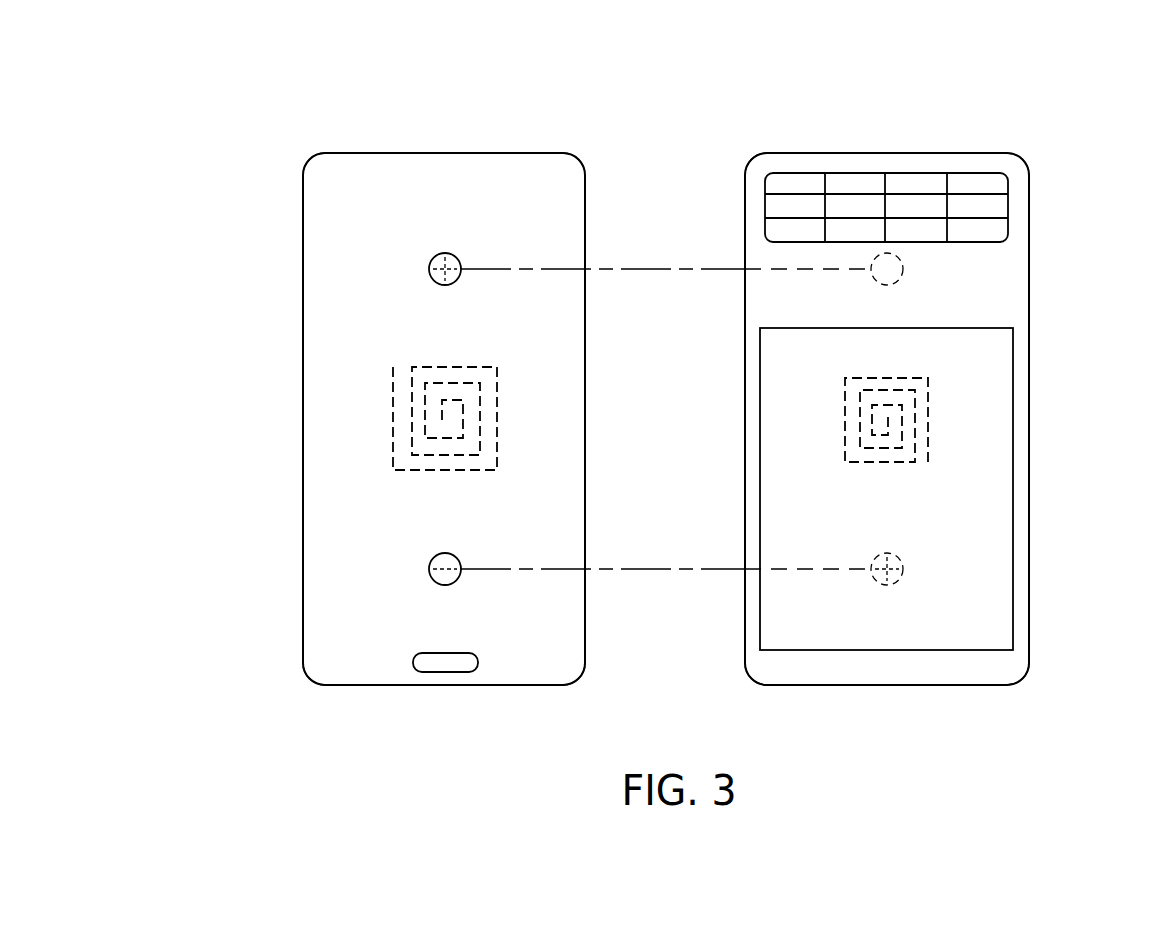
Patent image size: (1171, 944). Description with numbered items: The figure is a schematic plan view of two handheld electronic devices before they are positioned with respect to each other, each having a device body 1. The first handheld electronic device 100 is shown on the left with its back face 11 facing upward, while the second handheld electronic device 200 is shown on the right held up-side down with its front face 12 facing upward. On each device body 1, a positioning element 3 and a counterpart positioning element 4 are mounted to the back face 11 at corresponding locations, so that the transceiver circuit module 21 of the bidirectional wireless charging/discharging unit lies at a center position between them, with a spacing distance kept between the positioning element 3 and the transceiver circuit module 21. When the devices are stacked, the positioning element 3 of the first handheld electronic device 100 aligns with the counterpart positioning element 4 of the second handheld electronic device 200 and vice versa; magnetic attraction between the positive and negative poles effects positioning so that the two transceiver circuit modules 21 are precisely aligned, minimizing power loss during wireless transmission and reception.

The device body 1 is at (303, 222).
The first handheld electronic device 100 is at (548, 132).
The second handheld electronic device 200 is at (780, 132).
The positioning element 3 is at (452, 254).
The counterpart positioning element 4 is at (433, 558).
The back face 11 is at (348, 617).
The front face 12 is at (983, 307).
The transceiver circuit module 21 is at (393, 420).